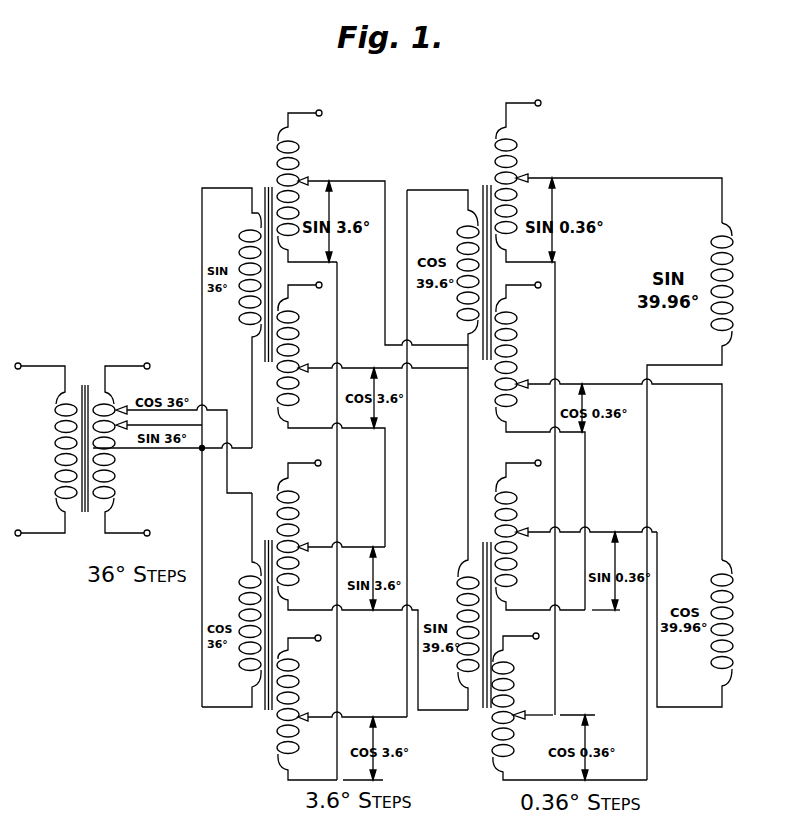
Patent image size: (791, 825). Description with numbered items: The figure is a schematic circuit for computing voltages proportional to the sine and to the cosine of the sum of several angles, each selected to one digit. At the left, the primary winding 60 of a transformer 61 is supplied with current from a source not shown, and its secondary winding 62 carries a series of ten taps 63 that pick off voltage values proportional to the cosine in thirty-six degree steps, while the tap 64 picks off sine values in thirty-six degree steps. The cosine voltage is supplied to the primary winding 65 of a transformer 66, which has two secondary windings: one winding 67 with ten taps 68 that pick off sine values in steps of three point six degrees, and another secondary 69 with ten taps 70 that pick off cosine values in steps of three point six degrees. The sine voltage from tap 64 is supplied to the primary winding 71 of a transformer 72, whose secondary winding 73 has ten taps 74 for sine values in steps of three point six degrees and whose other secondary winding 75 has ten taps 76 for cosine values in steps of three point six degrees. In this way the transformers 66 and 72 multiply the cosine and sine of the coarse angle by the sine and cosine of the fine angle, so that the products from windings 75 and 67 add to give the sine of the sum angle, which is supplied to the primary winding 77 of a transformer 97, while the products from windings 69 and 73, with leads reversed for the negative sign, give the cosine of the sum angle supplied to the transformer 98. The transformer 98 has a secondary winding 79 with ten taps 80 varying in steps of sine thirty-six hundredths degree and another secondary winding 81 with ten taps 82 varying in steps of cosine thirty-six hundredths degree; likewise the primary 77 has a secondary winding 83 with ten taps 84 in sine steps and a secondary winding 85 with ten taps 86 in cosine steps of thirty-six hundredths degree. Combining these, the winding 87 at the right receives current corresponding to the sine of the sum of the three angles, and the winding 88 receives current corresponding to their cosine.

The primary winding 60 is at (57, 443).
The transformer 61 is at (85, 386).
The secondary winding 62 is at (100, 390).
The taps 63 is at (121, 408).
The tap 64 is at (124, 448).
The primary winding 65 is at (240, 582).
The transformer 66 is at (266, 710).
The secondary winding 67 is at (297, 565).
The taps 68 is at (305, 522).
The secondary winding 69 is at (278, 752).
The taps 70 is at (298, 722).
The primary winding 71 is at (241, 233).
The transformer 72 is at (265, 188).
The secondary winding 73 is at (298, 147).
The taps 74 is at (309, 178).
The secondary winding 75 is at (298, 388).
The taps 76 is at (308, 366).
The primary winding 77 is at (462, 580).
The secondary winding 79 is at (510, 218).
The taps 80 is at (517, 177).
The secondary winding 81 is at (510, 398).
The taps 82 is at (527, 382).
The secondary winding 83 is at (510, 548).
The taps 84 is at (527, 530).
The secondary winding 85 is at (495, 760).
The taps 86 is at (524, 713).
The winding 87 is at (712, 242).
The winding 88 is at (733, 660).
The transformer 97 is at (484, 708).
The transformer 98 is at (483, 186).